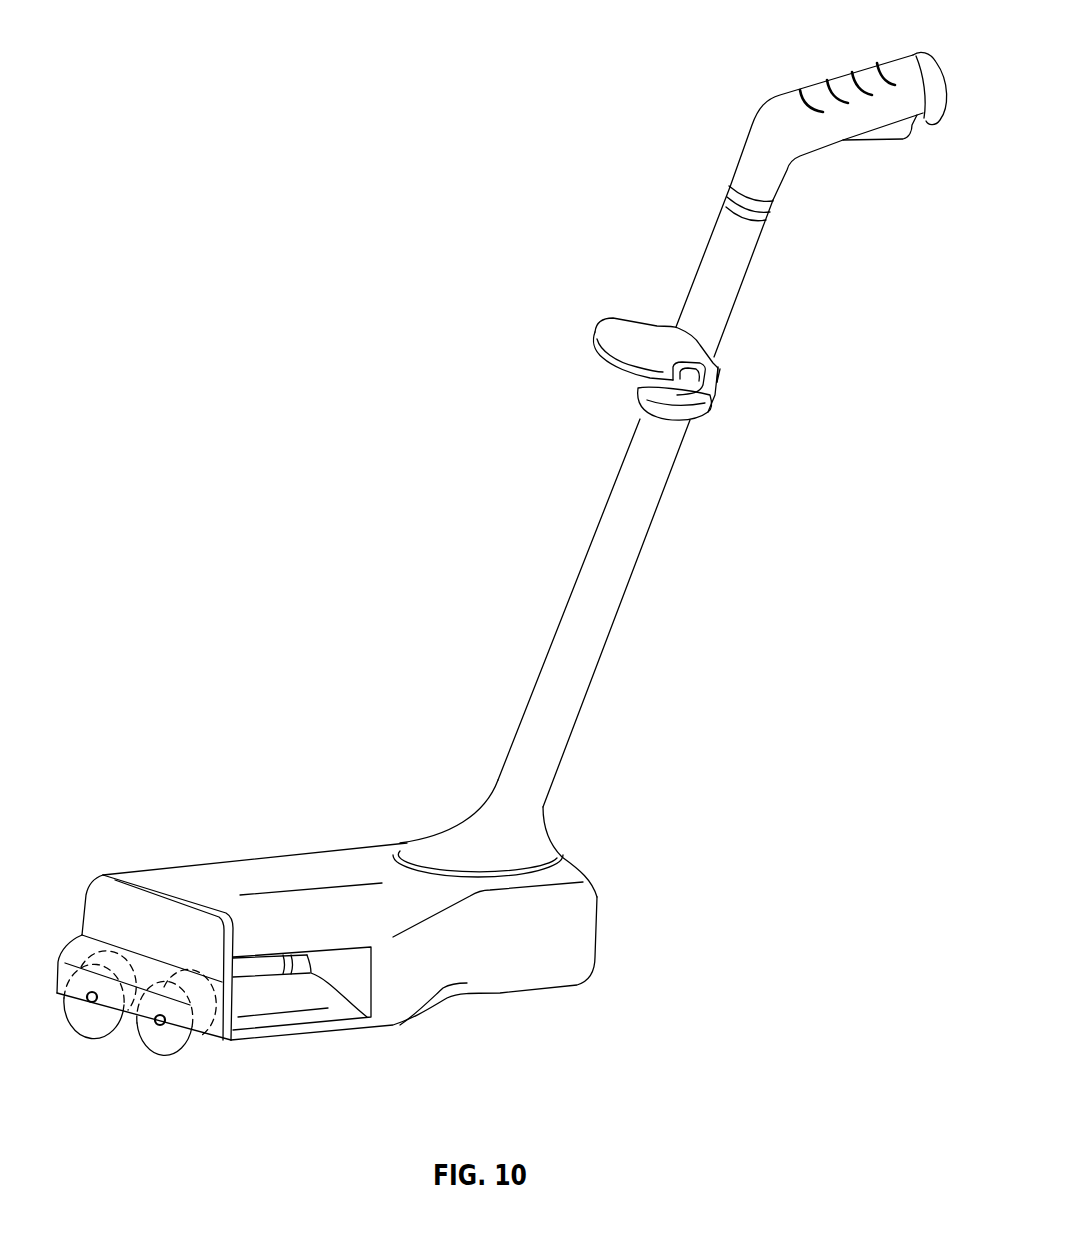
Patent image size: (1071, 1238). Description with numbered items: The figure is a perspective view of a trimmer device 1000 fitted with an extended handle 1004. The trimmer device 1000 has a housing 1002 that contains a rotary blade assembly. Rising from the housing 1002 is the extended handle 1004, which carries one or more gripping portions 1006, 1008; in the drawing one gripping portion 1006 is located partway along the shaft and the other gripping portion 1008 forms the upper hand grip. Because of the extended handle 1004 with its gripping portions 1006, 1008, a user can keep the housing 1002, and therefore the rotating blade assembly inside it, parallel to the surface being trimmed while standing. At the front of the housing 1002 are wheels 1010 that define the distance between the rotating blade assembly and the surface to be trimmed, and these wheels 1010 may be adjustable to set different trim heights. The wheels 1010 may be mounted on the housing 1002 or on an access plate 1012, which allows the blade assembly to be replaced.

The trimmer device 1000 is at (238, 450).
The housing 1002 is at (230, 877).
The extended handle 1004 is at (612, 527).
The gripping portion 1006 is at (613, 332).
The gripping portion 1008 is at (783, 122).
The wheels 1010 is at (165, 1042).
The access plate 1012 is at (103, 908).